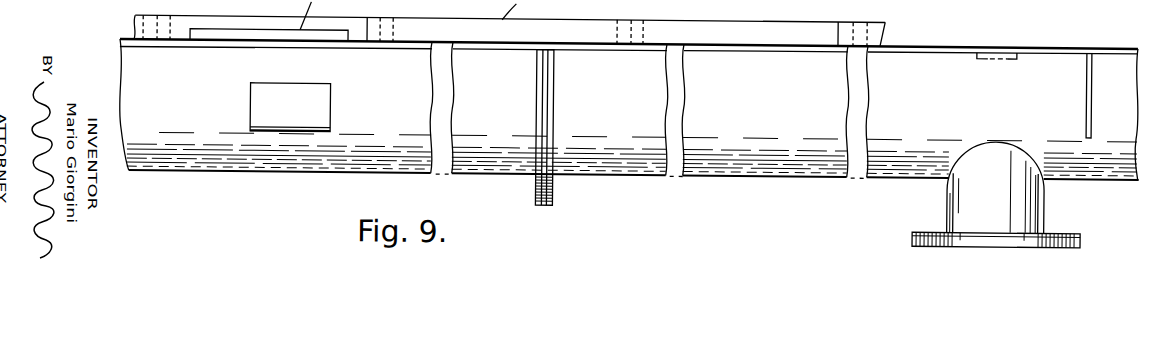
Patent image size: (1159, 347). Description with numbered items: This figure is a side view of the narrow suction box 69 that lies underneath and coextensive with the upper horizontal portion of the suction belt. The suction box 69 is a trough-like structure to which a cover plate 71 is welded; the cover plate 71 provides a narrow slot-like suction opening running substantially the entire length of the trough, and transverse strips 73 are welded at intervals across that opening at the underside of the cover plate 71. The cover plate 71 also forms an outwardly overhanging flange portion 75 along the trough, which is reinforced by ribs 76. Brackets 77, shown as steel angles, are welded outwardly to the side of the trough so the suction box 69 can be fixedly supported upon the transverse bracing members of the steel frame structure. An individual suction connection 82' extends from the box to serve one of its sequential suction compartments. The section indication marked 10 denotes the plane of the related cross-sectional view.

The suction box 69 is at (272, 172).
The cover plate 71 is at (920, 38).
The transverse strips 73 is at (993, 50).
The flange portion 75 is at (1068, 41).
The ribs 76 is at (1093, 98).
The brackets 77 is at (305, 125).
The suction connection 82' is at (986, 194).
The section line 10- 10 is at (999, 238).